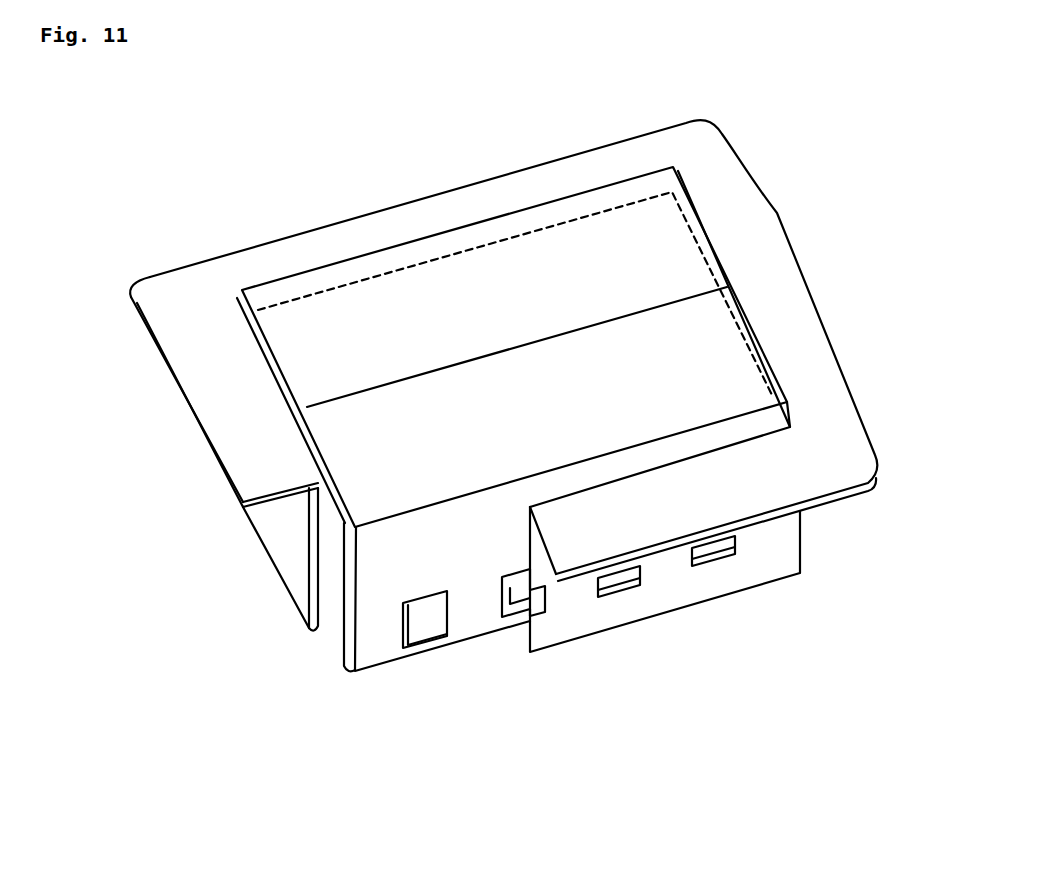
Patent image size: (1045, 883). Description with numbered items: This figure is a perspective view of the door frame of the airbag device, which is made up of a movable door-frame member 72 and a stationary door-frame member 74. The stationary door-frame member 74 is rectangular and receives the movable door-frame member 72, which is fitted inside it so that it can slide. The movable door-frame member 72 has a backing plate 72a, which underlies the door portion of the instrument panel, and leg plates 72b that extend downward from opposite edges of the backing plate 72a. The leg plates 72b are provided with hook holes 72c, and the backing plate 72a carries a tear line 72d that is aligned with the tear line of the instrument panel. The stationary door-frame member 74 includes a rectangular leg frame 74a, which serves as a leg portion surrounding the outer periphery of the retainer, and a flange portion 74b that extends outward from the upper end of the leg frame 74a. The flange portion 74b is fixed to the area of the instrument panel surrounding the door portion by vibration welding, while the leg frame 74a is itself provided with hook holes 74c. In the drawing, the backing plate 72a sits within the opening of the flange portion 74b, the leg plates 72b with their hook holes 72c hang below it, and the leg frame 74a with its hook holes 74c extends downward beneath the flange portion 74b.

The movable door-frame member 72 is at (658, 246).
The backing plate 72a is at (452, 324).
The leg plates 72b is at (372, 648).
The hook holes 72c is at (426, 621).
The tear line 72d is at (573, 334).
The stationary door-frame member 74 is at (822, 274).
The leg frame 74a is at (285, 525).
The flange portion 74b is at (805, 336).
The hook holes 74c is at (628, 594).